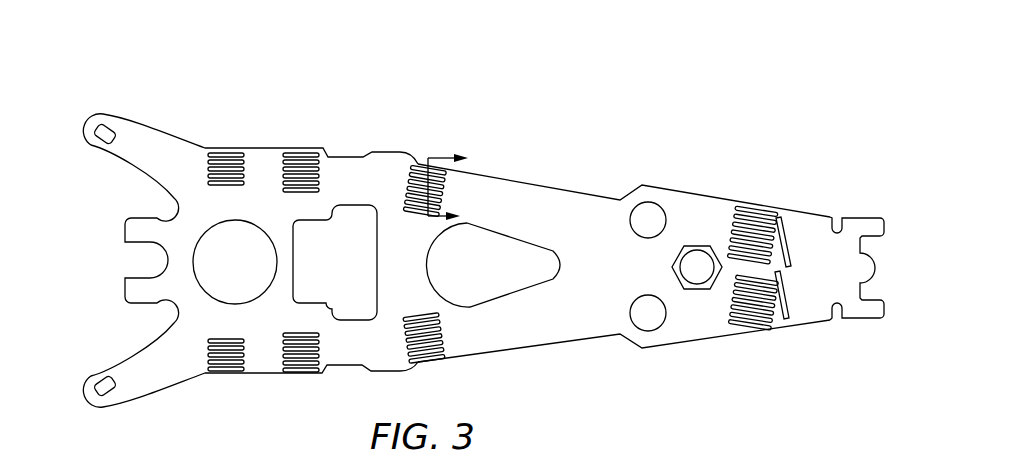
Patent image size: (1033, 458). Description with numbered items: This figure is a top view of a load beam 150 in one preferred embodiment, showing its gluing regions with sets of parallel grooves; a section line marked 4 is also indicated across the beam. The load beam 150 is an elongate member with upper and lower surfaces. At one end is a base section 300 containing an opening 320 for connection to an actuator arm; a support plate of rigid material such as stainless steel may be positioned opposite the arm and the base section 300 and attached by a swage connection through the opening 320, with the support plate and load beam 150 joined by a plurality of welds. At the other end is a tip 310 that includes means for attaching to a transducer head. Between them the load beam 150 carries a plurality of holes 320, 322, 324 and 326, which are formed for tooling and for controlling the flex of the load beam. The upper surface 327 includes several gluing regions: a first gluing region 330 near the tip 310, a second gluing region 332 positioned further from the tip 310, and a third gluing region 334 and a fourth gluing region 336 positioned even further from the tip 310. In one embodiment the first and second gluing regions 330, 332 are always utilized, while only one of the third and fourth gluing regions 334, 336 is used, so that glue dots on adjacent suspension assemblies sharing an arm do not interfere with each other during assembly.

The load beam 150 is at (385, 60).
The base section 300 is at (185, 200).
The tip 310 is at (846, 178).
The opening 320 is at (260, 272).
The hole 322 is at (363, 272).
The hole 324 is at (508, 277).
The hole 326 is at (690, 267).
The upper surface 327 is at (567, 203).
The first gluing region 330 is at (760, 217).
The second gluing region 332 is at (420, 165).
The third gluing region 334 is at (298, 158).
The fourth gluing region 336 is at (225, 158).
The section line 4- 4 is at (457, 185).